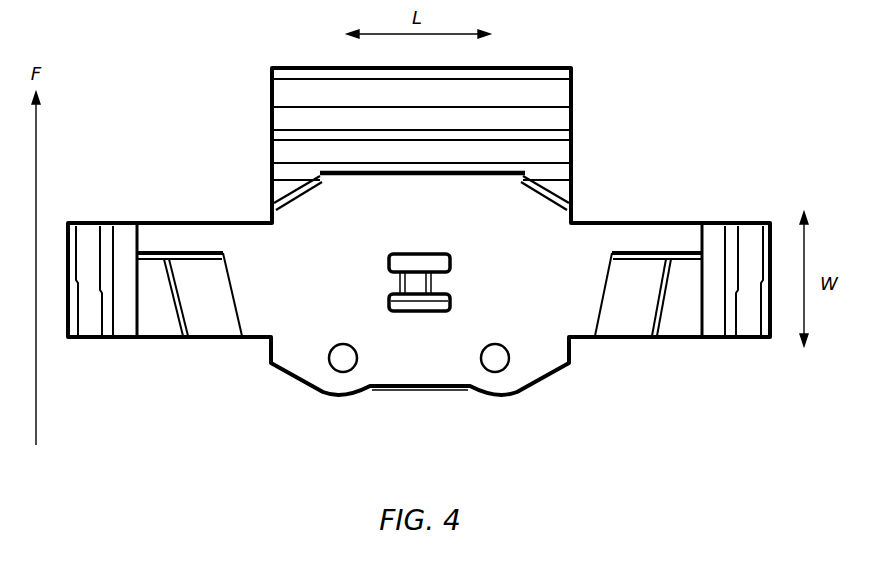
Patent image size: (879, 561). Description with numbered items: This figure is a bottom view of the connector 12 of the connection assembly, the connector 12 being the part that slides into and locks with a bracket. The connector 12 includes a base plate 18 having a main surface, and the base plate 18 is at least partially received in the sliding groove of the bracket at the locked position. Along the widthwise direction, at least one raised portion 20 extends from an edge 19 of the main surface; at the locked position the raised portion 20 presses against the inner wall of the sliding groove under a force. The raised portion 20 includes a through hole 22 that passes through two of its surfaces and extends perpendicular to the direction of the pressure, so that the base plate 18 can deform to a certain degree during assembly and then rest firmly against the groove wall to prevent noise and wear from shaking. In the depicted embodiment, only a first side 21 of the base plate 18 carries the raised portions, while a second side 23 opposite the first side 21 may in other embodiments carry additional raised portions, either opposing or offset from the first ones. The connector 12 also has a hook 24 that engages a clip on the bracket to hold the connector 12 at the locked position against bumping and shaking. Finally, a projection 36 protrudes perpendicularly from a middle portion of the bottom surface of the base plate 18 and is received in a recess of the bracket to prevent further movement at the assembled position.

The connector 12 is at (515, 60).
The base plate 18 is at (426, 198).
The edge 19 is at (290, 350).
The raised portion 20 is at (345, 384).
The first side 21 is at (304, 385).
The through hole 22 is at (497, 360).
The second side 23 is at (317, 172).
The hook 24 is at (648, 275).
The projection 36 is at (415, 282).